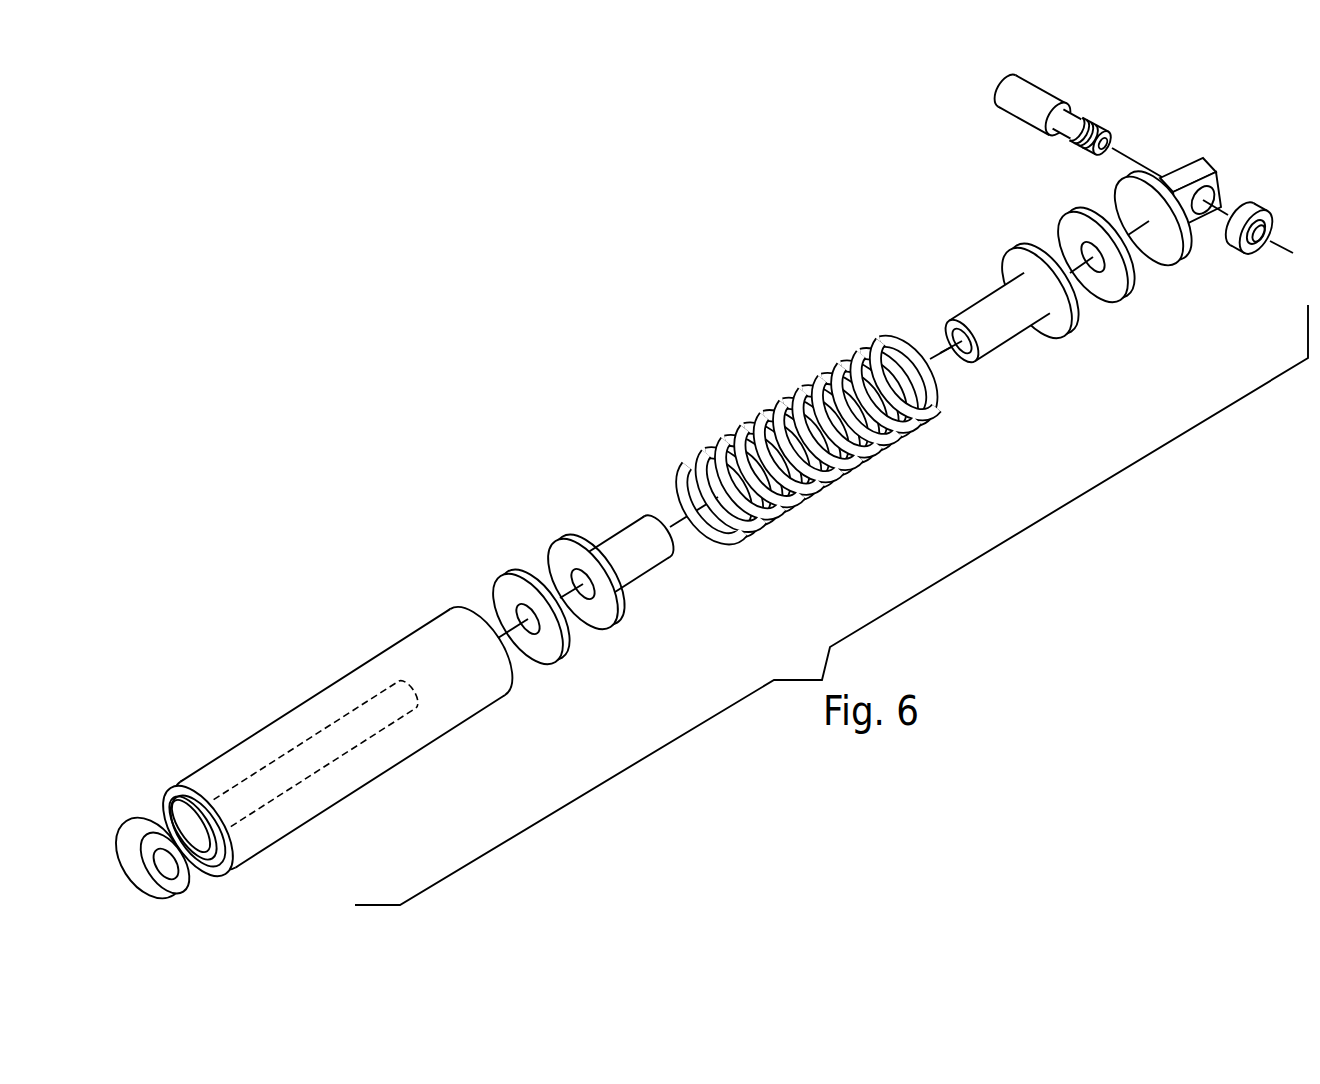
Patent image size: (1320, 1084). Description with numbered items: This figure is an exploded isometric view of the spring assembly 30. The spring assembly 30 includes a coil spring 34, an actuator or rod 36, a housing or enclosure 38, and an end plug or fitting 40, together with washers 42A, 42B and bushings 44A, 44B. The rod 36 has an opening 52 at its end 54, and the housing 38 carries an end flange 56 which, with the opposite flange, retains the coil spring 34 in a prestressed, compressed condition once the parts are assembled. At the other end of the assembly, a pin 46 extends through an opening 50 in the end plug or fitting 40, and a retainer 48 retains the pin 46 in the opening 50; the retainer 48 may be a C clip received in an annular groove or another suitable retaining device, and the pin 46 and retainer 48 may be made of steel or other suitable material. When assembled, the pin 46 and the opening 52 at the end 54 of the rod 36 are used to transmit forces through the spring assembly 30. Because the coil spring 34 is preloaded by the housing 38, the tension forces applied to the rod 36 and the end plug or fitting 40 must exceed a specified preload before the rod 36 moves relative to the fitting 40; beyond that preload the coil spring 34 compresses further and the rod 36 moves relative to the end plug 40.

The spring assembly 30 is at (438, 497).
The coil spring 34 is at (767, 407).
The actuator or rod 36 is at (200, 827).
The housing or enclosure 38 is at (348, 670).
The end plug or fitting 40 is at (1203, 228).
The washer 42A is at (535, 568).
The washer 42B is at (1132, 293).
The bushing 44A is at (623, 543).
The bushing 44B is at (990, 305).
The pin 46 is at (1025, 115).
The retainer 48 is at (1263, 255).
The opening 50 is at (1220, 193).
The opening 52 is at (170, 876).
The end 54 is at (135, 837).
The end flange 56 is at (233, 860).